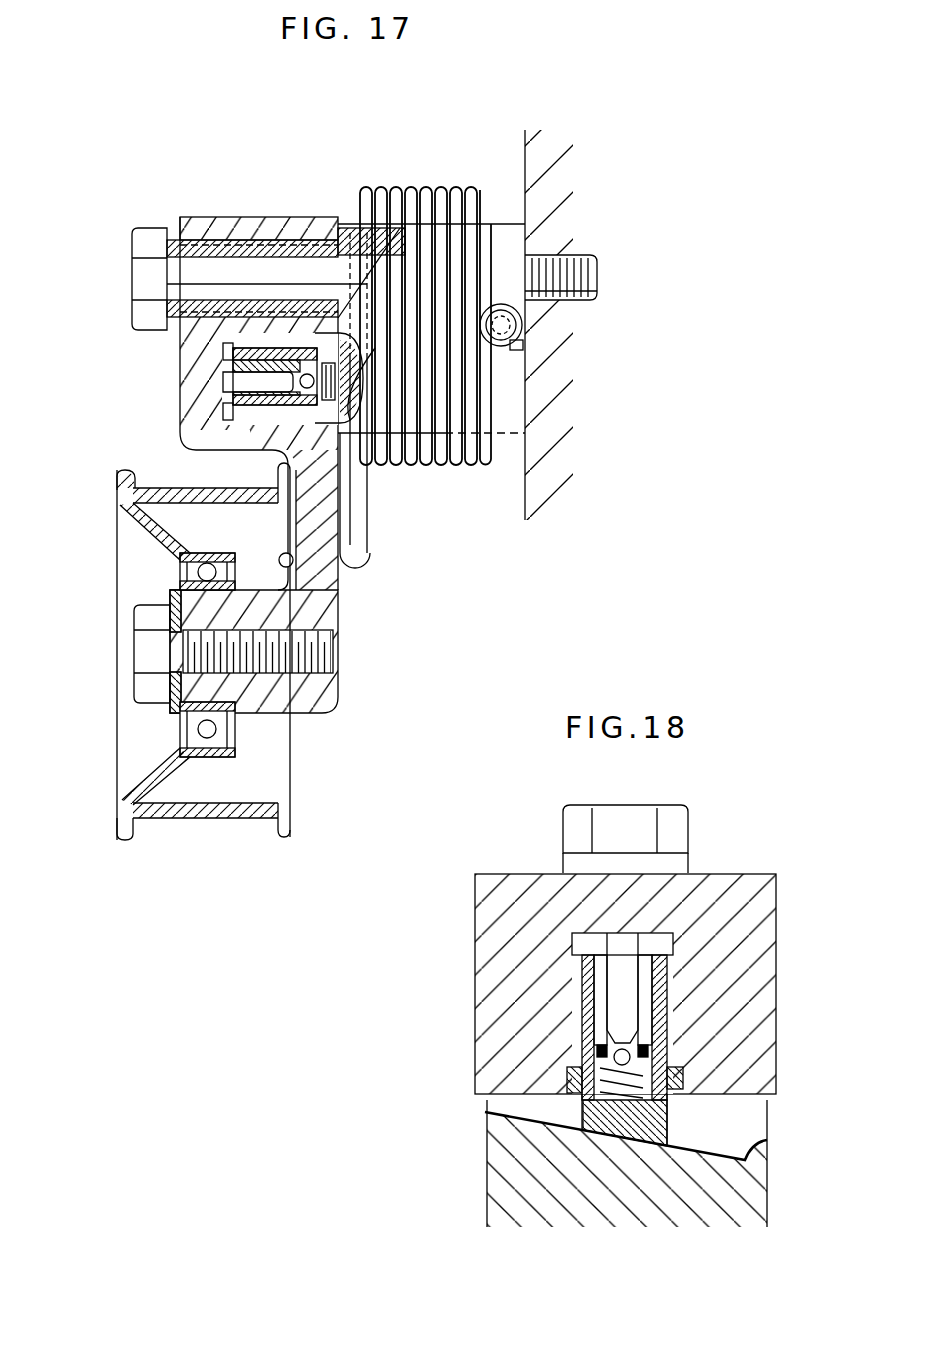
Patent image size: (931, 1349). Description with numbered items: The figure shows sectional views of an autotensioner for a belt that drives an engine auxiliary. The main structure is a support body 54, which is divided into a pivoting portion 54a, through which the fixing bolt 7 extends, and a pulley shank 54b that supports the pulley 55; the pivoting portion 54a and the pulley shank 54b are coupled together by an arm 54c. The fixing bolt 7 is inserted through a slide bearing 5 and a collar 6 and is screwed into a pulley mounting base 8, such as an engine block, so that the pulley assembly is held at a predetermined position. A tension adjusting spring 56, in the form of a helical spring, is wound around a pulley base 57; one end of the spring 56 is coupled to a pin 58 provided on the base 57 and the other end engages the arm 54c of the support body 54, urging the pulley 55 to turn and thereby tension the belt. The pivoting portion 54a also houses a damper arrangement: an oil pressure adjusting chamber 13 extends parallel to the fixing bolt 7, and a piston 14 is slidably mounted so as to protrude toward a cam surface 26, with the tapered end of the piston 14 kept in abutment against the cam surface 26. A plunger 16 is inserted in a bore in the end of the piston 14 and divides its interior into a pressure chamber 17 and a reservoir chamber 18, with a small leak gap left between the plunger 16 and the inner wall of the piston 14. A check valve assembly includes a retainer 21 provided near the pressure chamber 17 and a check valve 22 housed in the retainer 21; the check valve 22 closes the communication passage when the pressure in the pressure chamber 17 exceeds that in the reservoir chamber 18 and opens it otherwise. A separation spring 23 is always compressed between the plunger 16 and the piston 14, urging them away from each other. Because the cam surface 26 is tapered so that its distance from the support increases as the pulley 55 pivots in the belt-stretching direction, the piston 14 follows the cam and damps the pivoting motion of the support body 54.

In FIG. 17, the slide bearing 5 is at (270, 218).
In FIG. 17, the collar 6 is at (172, 238).
In FIG. 17, the fixing bolt 7 is at (568, 263).
In FIG. 18, the fixing bolt 7 is at (667, 830).
In FIG. 17, the pulley mounting base 8 is at (550, 170).
In FIG. 17, the oil pressure adjusting chamber 13 is at (182, 423).
In FIG. 18, the oil pressure adjusting chamber 13 is at (667, 982).
In FIG. 17, the piston 14 is at (372, 385).
In FIG. 18, the piston 14 is at (627, 1123).
In FIG. 17, the plunger 16 is at (293, 410).
In FIG. 18, the plunger 16 is at (597, 993).
In FIG. 18, the pressure chamber 17 is at (673, 1072).
In FIG. 18, the reservoir chamber 18 is at (617, 977).
In FIG. 18, the retainer 21 is at (587, 1103).
In FIG. 18, the check valve 22 is at (597, 1058).
In FIG. 18, the separation spring 23 is at (617, 1105).
In FIG. 17, the cam surface 26 is at (375, 350).
In FIG. 18, the cam surface 26 is at (752, 1141).
In FIG. 17, the support body 54 is at (219, 205).
In FIG. 18, the support body 54 is at (753, 917).
In FIG. 17, the pivoting portion 54a is at (190, 351).
In FIG. 17, the pulley shank 54b is at (303, 617).
In FIG. 17, the arm 54c is at (310, 538).
In FIG. 17, the pulley 55 is at (143, 523).
In FIG. 17, the tension adjusting spring 56 is at (402, 213).
In FIG. 17, the pulley base 57 is at (493, 247).
In FIG. 18, the pulley base 57 is at (723, 1207).
In FIG. 17, the pin 58 is at (510, 333).